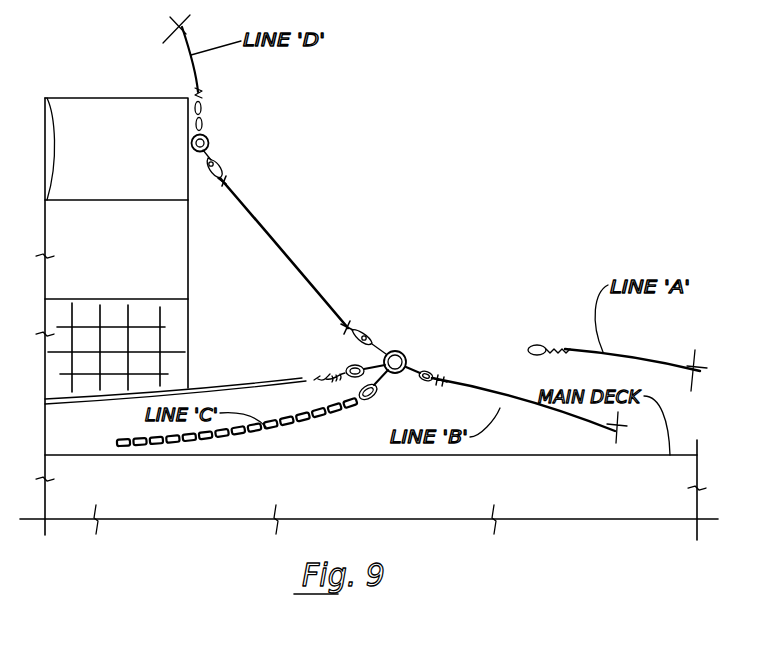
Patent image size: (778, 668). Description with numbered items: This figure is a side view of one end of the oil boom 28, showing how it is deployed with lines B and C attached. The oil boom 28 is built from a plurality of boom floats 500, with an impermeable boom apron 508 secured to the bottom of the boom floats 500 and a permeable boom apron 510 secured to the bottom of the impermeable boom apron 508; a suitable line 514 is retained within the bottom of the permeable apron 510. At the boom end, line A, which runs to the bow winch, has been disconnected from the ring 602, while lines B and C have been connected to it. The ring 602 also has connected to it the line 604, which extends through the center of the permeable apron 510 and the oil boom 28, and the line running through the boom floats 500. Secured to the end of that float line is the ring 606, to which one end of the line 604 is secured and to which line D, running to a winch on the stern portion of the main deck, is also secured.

The oil boom 28 is at (162, 118).
The boom floats 500 is at (127, 108).
The impermeable boom apron 508 is at (172, 258).
The permeable boom apron 510 is at (175, 342).
The line 514 is at (264, 386).
The ring 602 is at (401, 355).
The line 604 is at (268, 238).
The ring 606 is at (208, 140).